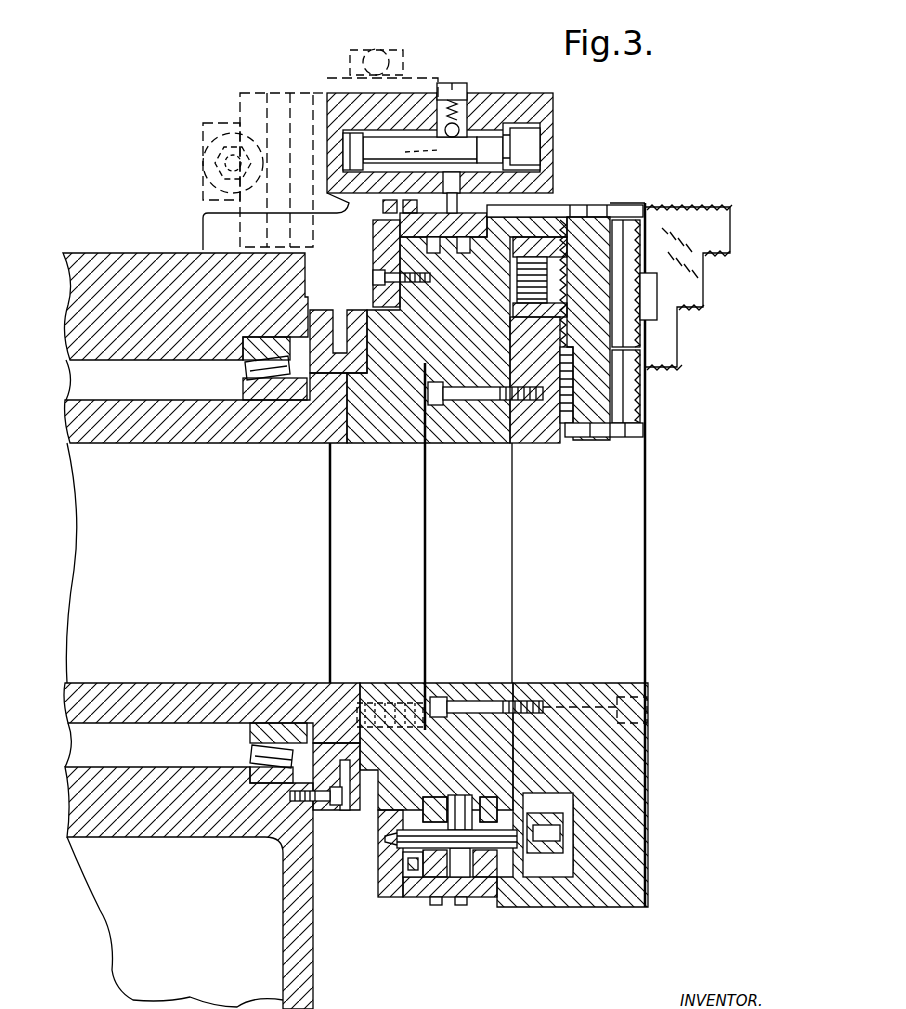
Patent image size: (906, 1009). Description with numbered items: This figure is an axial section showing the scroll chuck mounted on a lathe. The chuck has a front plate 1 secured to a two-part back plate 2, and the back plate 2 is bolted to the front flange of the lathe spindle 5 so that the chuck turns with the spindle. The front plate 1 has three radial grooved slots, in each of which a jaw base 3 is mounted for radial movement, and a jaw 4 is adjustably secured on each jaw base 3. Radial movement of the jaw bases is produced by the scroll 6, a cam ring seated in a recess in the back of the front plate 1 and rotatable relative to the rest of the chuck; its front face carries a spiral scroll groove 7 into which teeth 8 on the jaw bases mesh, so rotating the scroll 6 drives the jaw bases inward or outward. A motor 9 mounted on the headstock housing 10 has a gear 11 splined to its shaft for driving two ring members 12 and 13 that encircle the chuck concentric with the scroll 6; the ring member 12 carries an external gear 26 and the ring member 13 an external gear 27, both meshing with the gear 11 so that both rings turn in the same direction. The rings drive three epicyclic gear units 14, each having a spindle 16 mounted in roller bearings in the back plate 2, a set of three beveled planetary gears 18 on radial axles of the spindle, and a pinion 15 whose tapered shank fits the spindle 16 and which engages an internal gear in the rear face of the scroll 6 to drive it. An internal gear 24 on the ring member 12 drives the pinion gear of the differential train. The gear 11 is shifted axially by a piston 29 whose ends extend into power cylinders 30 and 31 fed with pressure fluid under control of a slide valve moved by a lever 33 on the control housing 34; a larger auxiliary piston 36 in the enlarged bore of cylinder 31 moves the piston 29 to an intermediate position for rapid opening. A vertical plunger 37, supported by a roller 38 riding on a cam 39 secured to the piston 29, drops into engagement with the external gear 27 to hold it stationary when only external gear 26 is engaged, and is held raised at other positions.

The front plate 1 is at (658, 750).
The back plate 2 is at (480, 432).
The jaw base 3 is at (600, 240).
The jaw 4 is at (703, 210).
The lathe spindle 5 is at (164, 436).
The scroll 6 is at (537, 240).
The scroll groove 7 is at (560, 247).
The teeth 8 is at (588, 232).
The motor 9 is at (251, 84).
The headstock housing 10 is at (135, 248).
The gear 11 is at (386, 210).
The ring member 12 is at (413, 897).
The ring member 13 is at (481, 898).
The epicyclic gear unit 14 is at (380, 868).
The pinion 15 is at (541, 868).
The spindle 16 is at (462, 860).
The planetary gears 18 is at (435, 790).
The internal gear 24 is at (407, 900).
The external gear 26 is at (438, 905).
The external gear 27 is at (457, 905).
The piston 29 is at (395, 140).
The power cylinder 30 is at (360, 135).
The power cylinder 31 is at (490, 150).
The lever 33 is at (372, 48).
The control housing 34 is at (516, 94).
The auxiliary piston 36 is at (525, 145).
The plunger 37 is at (460, 208).
The roller 38 is at (468, 117).
The cam 39 is at (414, 153).